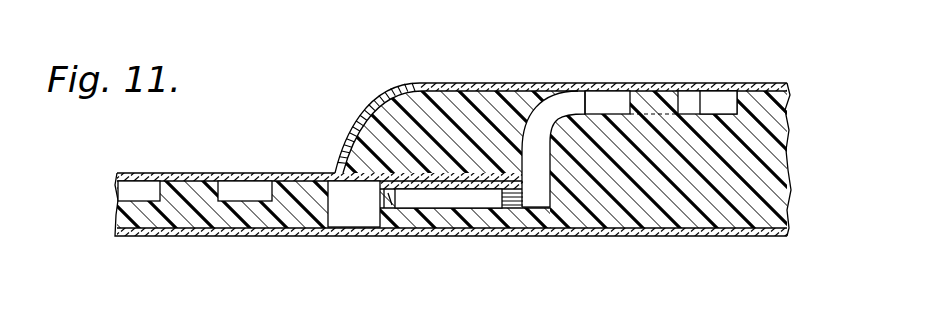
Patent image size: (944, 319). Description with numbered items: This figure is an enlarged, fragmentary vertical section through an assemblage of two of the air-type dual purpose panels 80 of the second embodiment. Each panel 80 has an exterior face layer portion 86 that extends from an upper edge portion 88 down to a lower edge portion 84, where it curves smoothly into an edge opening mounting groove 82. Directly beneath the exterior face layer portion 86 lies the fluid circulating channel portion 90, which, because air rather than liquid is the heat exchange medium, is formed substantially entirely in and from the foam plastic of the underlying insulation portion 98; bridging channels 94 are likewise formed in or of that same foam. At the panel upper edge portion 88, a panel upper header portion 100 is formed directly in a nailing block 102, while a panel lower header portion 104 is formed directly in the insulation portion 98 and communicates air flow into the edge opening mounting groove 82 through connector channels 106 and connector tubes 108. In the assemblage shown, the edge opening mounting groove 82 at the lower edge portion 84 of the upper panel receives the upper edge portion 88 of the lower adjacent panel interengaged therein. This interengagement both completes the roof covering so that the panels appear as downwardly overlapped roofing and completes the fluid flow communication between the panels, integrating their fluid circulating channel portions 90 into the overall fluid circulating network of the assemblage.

The panel 80 is at (177, 165).
The edge opening mounting groove 82 is at (513, 222).
The lower edge portion 84 is at (348, 132).
The exterior face layer portion 86 is at (257, 172).
The upper edge portion 88 is at (477, 236).
The fluid circulating channel portion 90 is at (127, 192).
The bridging channel 94 is at (245, 193).
The insulation portion 98 is at (788, 167).
The panel upper header portion 100 is at (457, 198).
The nailing block 102 is at (405, 222).
The panel lower header portion 104 is at (615, 97).
The connector channel 106 is at (347, 157).
The connector tube 108 is at (541, 236).